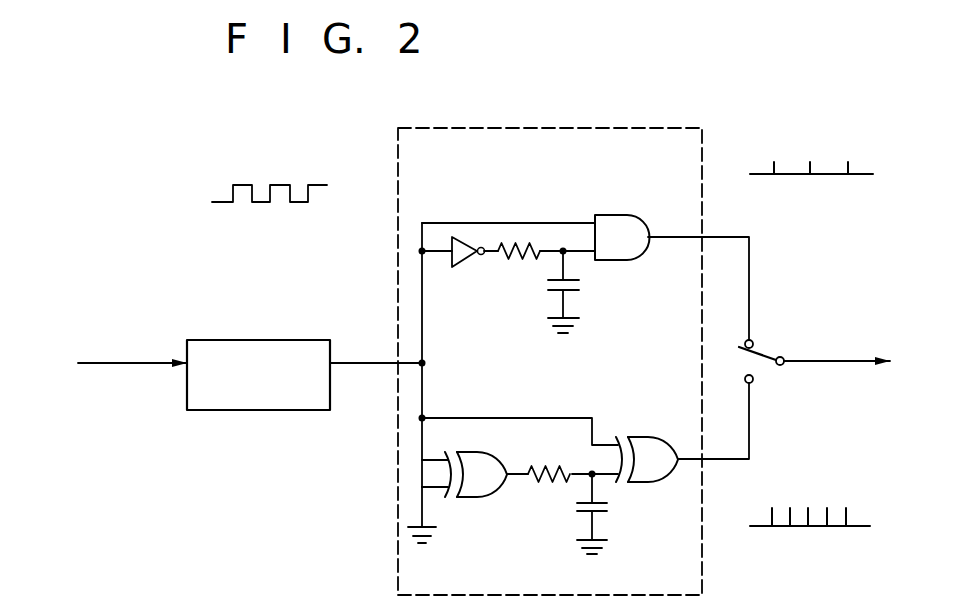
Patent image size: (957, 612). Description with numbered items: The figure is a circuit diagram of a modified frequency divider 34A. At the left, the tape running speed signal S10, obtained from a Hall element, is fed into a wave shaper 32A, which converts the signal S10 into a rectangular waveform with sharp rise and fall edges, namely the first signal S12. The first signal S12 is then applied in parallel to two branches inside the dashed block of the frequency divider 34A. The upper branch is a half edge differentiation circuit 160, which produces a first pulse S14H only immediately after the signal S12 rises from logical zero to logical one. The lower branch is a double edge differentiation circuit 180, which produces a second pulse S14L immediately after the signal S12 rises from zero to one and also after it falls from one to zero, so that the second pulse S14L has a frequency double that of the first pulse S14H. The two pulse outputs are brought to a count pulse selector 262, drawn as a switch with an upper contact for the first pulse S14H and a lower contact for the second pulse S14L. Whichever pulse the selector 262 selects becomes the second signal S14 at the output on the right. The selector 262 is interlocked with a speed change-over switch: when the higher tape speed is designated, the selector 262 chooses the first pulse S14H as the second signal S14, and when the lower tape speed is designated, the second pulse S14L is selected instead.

The frequency divider 34A is at (638, 155).
The wave shaper 32A is at (268, 348).
The half edge differentiation circuit 160 is at (527, 219).
The double edge differentiation circuit 180 is at (547, 482).
The count pulse selector 262 is at (772, 352).
The tape running speed signal S10 is at (111, 343).
The first signal S12 is at (422, 363).
The second signal S14 is at (861, 361).
The first pulse S14H is at (777, 187).
The second pulse S14L is at (752, 459).